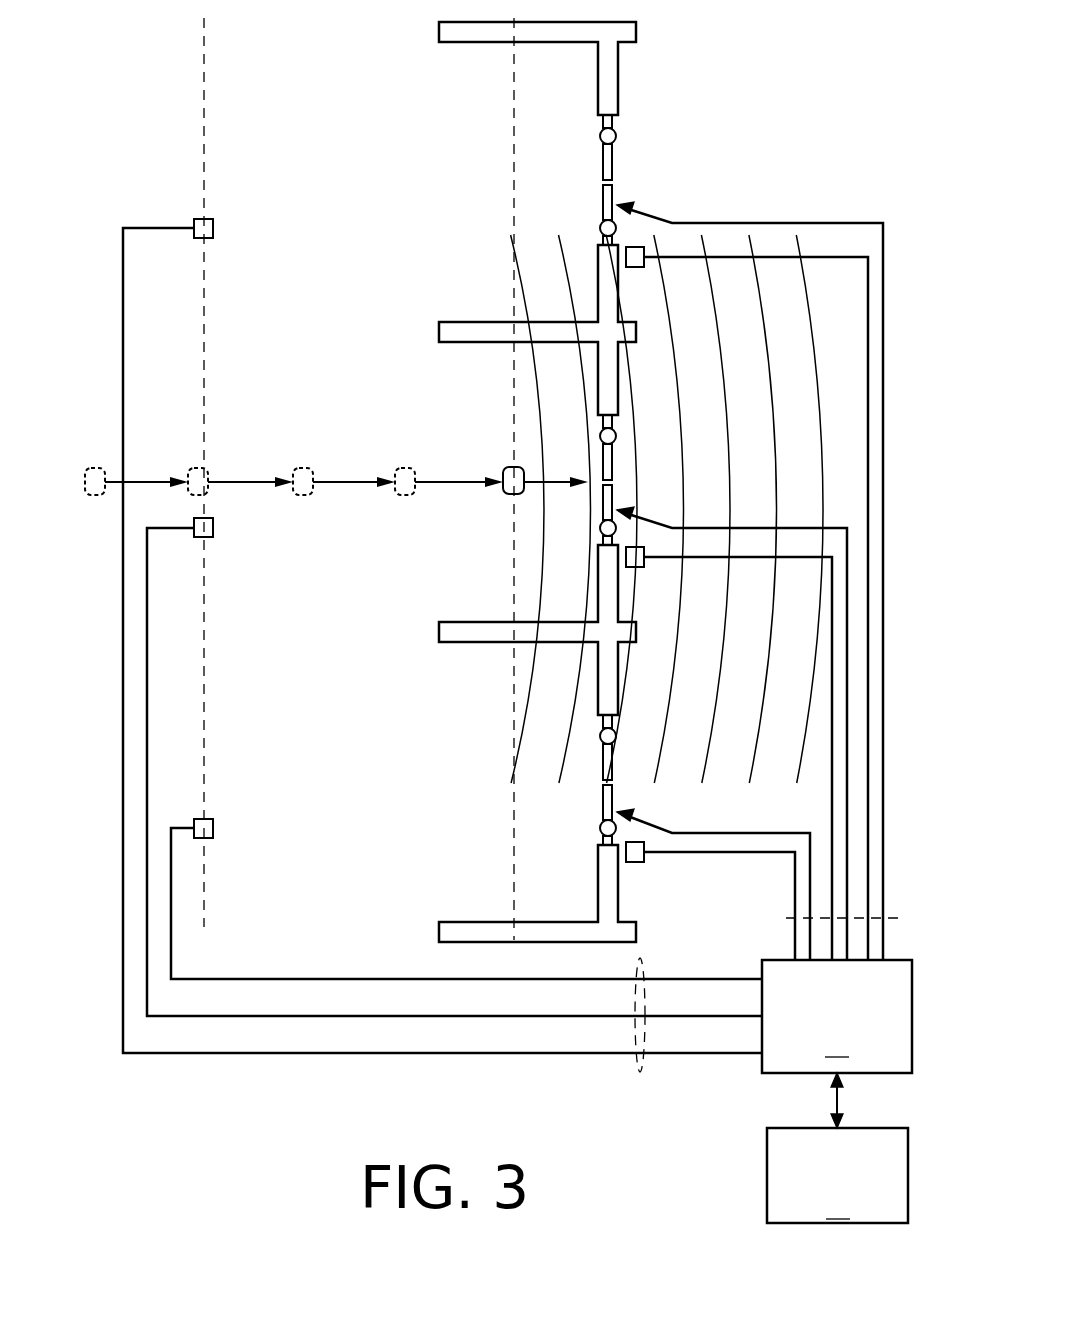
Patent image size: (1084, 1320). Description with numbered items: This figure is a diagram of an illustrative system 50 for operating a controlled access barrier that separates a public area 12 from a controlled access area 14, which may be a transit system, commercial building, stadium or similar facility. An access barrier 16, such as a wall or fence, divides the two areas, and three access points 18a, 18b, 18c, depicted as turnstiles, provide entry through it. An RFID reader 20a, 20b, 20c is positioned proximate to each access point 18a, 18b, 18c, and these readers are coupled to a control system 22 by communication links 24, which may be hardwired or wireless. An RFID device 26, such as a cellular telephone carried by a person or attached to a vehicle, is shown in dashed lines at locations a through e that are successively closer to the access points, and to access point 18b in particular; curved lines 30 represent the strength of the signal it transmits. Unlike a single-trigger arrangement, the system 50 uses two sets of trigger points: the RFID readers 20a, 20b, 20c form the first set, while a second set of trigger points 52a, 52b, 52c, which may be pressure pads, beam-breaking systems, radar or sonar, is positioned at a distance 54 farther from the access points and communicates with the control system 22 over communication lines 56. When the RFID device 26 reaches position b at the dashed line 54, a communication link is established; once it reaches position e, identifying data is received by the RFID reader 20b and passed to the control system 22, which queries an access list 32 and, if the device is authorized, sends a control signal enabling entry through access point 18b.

The public area 12 is at (347, 174).
The controlled access area 14 is at (807, 174).
The access barrier 16 is at (619, 80).
The access point 18a is at (612, 178).
The access point 18b is at (612, 480).
The access point 18c is at (612, 780).
The RFID reader 20a is at (646, 262).
The RFID reader 20b is at (646, 565).
The RFID reader 20c is at (646, 862).
The control system 22 is at (837, 1016).
The communication links 24 is at (786, 918).
The RFID device 26 is at (95, 467).
The curved lines representing RFID signal strength 30 is at (512, 245).
The access list 32 is at (512, 104).
The system 50 is at (796, 86).
The second trigger point 52a is at (213, 220).
The second trigger point 52b is at (213, 537).
The second trigger point 52c is at (213, 838).
The distance 54 is at (207, 270).
The communication lines 56 is at (640, 1070).